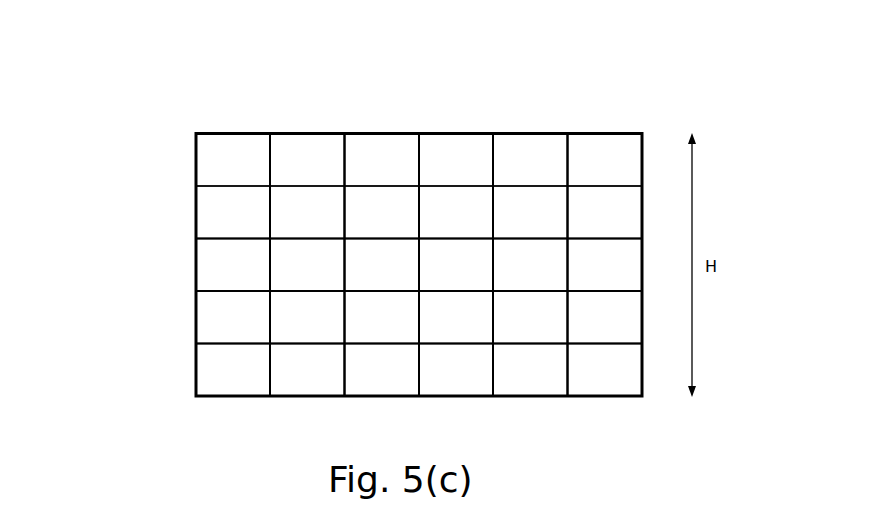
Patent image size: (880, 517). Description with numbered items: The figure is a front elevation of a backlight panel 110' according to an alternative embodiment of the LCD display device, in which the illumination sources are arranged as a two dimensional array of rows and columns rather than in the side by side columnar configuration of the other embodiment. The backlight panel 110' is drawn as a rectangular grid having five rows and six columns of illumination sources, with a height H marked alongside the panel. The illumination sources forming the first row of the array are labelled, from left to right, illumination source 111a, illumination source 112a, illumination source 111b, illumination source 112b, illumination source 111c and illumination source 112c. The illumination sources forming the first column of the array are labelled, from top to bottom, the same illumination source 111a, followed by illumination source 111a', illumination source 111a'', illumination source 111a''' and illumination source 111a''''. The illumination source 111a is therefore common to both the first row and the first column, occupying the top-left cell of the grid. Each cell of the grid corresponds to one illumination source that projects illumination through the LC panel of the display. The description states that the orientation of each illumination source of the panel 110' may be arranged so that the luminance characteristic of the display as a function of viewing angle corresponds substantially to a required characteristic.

The backlight panel 110' is at (499, 204).
The illumination source 111a is at (211, 210).
The illumination source 112a is at (307, 162).
The illumination source 111b is at (385, 162).
The illumination source 112b is at (455, 162).
The illumination source 111c is at (527, 162).
The illumination source 112c is at (605, 162).
The illumination source 111a' is at (376, 208).
The illumination source 111a'' is at (374, 265).
The illumination source 111a''' is at (372, 317).
The illumination source 111a'''' is at (370, 371).